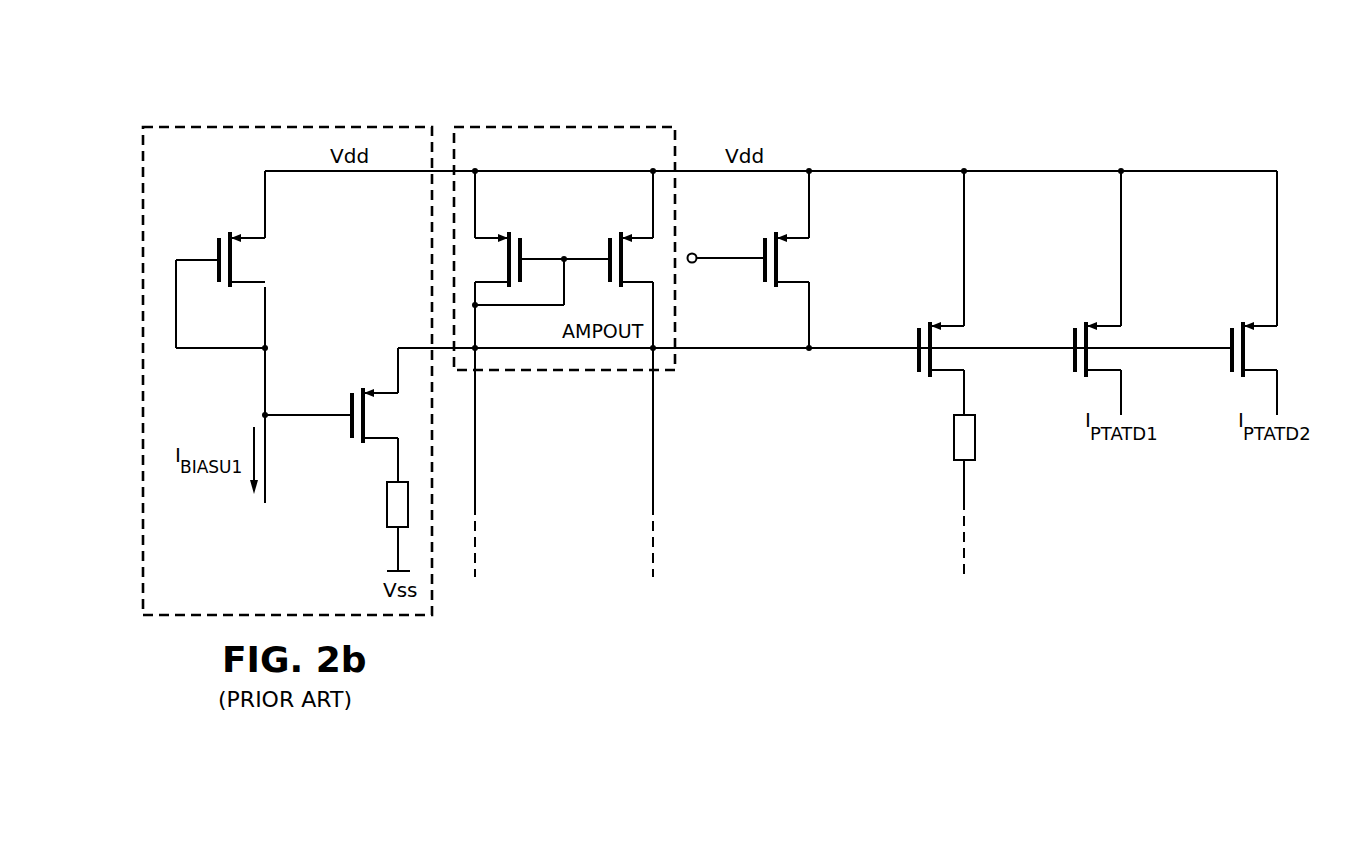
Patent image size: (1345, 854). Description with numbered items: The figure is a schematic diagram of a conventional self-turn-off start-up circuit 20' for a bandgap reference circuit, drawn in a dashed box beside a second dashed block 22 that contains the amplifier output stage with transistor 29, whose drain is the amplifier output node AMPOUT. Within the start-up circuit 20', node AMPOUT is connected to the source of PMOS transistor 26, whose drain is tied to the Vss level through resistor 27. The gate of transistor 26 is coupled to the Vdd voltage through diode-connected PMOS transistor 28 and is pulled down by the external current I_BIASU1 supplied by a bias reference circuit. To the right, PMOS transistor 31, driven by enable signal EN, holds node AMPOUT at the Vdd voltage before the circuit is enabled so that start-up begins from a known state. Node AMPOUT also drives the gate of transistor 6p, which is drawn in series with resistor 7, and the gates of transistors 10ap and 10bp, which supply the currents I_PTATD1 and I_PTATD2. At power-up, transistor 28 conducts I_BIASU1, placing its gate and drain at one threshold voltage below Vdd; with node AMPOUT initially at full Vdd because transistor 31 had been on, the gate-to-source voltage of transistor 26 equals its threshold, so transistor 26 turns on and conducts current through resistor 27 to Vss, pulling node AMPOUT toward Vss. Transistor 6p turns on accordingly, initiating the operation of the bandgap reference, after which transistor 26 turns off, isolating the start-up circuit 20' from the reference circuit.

The start-up circuit 20' is at (287, 337).
The amplifier output stage 22 is at (535, 121).
The diode-connected PMOS transistor 28 is at (219, 250).
The PMOS transistor 26 is at (350, 429).
The resistor 27 is at (387, 505).
The transistor 29 is at (607, 250).
The PMOS transistor 31 is at (762, 270).
The transistor 6p is at (916, 340).
The resistor 7 is at (975, 437).
The PMOS current source transistor 10ap is at (1072, 339).
The PMOS current source transistor 10bp is at (1229, 339).